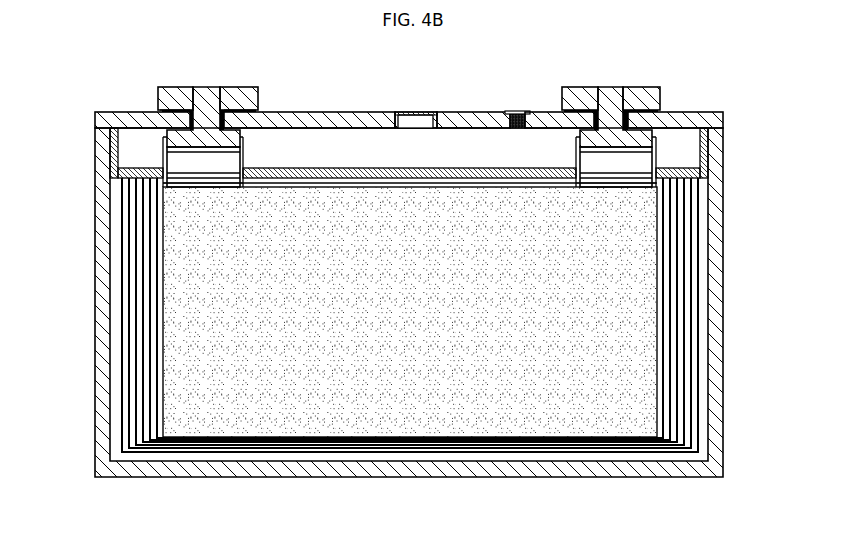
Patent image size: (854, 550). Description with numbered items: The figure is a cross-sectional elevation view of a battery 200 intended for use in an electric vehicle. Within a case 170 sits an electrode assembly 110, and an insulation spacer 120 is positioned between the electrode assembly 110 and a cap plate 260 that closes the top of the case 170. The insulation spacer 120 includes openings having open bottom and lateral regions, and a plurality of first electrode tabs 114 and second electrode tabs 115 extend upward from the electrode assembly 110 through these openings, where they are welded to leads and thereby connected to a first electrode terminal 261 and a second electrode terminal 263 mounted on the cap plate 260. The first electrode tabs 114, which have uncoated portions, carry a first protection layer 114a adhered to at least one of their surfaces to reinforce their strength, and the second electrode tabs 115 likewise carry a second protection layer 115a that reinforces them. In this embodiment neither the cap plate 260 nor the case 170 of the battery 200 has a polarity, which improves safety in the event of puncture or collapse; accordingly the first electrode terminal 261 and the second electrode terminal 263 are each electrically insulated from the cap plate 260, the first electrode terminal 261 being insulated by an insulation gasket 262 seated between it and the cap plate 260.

The electrode assembly 110 is at (442, 454).
The first electrode tabs 114 is at (187, 162).
The first protection layer 114a is at (185, 180).
The second electrode tabs 115 is at (638, 157).
The second protection layer 115a is at (635, 173).
The insulation spacer 120 is at (708, 138).
The case 170 is at (198, 472).
The battery 200 is at (757, 83).
The cap plate 260 is at (325, 118).
The first electrode terminal 261 is at (237, 92).
The insulation gasket 262 is at (192, 119).
The second electrode terminal 263 is at (647, 93).